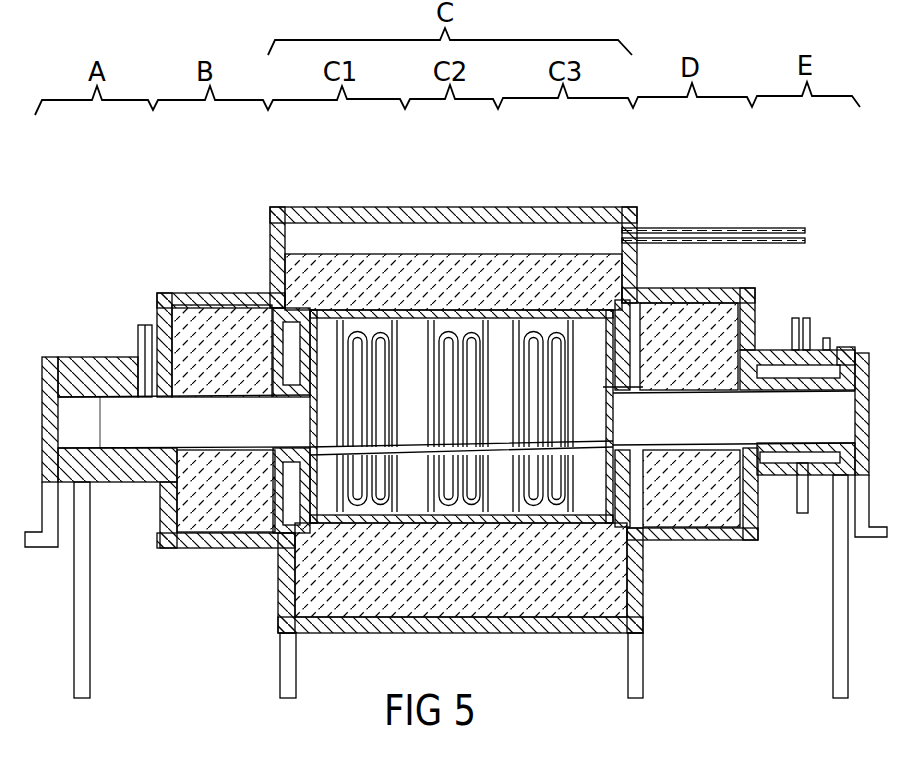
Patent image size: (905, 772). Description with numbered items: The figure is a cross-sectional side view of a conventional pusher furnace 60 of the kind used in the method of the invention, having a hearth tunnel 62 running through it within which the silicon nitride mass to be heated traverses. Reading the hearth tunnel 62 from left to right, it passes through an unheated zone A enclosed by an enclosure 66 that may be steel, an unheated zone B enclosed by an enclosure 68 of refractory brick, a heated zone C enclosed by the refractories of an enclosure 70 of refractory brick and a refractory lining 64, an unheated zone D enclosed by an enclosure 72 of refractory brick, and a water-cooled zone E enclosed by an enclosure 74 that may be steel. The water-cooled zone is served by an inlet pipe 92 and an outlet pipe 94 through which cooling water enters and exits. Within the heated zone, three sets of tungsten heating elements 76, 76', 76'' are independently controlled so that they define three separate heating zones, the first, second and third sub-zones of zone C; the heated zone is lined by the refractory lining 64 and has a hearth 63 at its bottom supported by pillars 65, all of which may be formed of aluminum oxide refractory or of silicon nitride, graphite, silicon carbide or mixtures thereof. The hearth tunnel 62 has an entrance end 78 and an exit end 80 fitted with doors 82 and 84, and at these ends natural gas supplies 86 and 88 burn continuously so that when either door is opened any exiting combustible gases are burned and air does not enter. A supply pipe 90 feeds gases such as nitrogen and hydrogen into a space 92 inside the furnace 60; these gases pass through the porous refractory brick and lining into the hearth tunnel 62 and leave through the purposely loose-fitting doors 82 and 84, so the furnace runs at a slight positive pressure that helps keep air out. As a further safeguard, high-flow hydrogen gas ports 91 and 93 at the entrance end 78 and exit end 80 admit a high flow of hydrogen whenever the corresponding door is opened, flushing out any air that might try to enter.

The pusher furnace 60 is at (74, 234).
The hearth tunnel 62 is at (133, 440).
The hearth 63 is at (228, 462).
The refractory lining 64 is at (298, 338).
The pillars 65 is at (500, 505).
The enclosure 66 is at (112, 372).
The enclosure 68 is at (215, 320).
The enclosure 70 is at (505, 602).
The enclosure 72 is at (687, 507).
The enclosure 74 is at (775, 473).
The tungsten heating elements 76 is at (365, 341).
The tungsten heating elements 76' is at (454, 341).
The tungsten heating elements 76'' is at (543, 341).
The entrance end 78 is at (117, 410).
The exit end 80 is at (824, 410).
The door 82 is at (48, 362).
The door 84 is at (855, 355).
The natural gas supply 86 is at (43, 545).
The natural gas supply 88 is at (873, 537).
The supply pipe 90 is at (678, 227).
The high-flow hydrogen gas port 91 is at (150, 325).
The inlet pipe 92 is at (575, 233).
The high-flow hydrogen gas port 93 is at (820, 347).
The outlet pipe 94 is at (803, 513).